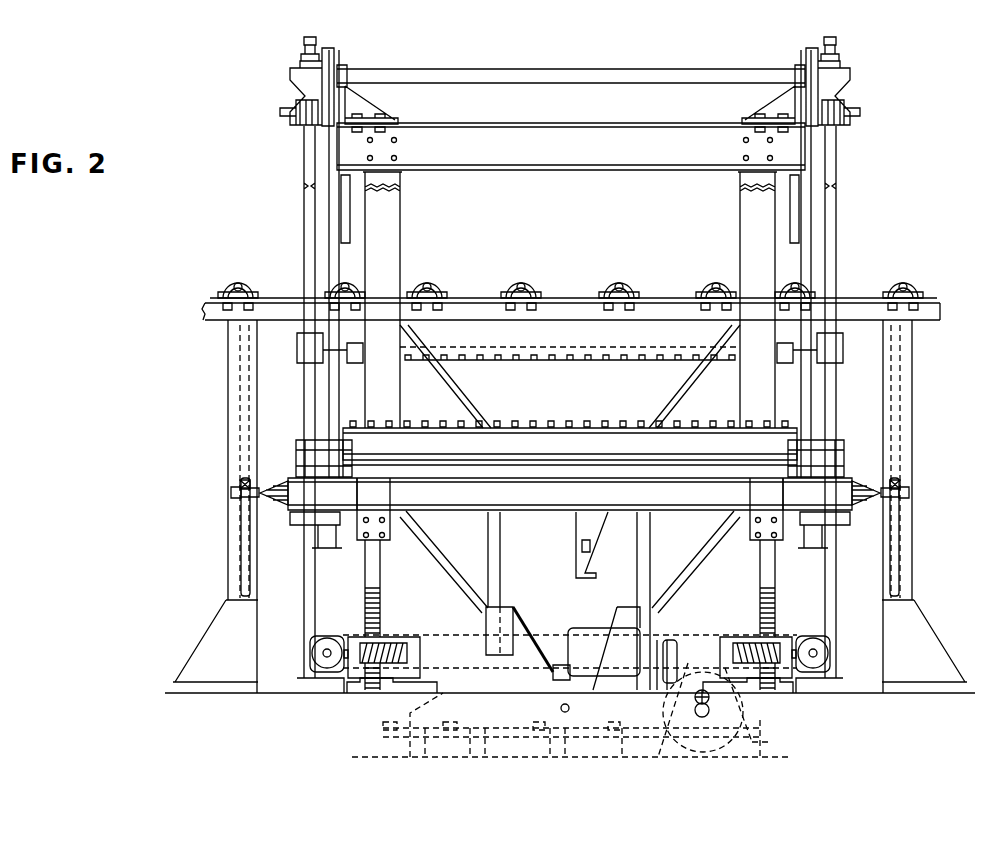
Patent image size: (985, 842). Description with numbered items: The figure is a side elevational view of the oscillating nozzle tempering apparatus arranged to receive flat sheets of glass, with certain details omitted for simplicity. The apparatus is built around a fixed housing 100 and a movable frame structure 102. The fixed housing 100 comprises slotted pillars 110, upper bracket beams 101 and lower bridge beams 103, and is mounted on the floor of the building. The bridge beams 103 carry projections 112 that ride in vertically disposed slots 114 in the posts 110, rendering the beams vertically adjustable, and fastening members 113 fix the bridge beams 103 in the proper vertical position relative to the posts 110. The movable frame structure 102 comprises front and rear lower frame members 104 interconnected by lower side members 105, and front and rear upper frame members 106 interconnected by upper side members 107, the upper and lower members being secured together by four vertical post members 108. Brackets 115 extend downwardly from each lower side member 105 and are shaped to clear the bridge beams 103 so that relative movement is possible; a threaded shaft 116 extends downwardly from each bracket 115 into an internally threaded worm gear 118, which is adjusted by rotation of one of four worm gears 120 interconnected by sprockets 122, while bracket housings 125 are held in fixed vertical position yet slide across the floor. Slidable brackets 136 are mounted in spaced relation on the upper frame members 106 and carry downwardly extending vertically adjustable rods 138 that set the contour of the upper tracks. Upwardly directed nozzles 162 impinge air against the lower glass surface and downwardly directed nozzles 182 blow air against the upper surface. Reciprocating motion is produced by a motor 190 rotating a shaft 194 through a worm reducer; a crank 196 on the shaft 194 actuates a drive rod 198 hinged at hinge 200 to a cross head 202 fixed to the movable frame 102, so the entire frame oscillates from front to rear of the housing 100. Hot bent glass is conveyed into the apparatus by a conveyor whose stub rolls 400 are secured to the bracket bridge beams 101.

The fixed housing 100 is at (199, 645).
The upper bracket beam 101 is at (577, 307).
The movable frame structure 102 is at (352, 399).
The lower bridge beam 103 is at (570, 584).
The lower frame member 104 is at (318, 511).
The lower side member 105 is at (620, 519).
The upper frame member 106 is at (348, 104).
The upper side member 107 is at (571, 117).
The vertical post member 108 is at (400, 198).
The slotted pillar 110 is at (240, 433).
The projection 112 is at (231, 492).
The fastening member 113 is at (240, 483).
The slot 114 is at (242, 529).
The bracket 115 is at (388, 494).
The threaded shaft 116 is at (380, 583).
The internally threaded worm gear 118 is at (400, 645).
The worm gear 120 is at (328, 638).
The sprocket 122 is at (542, 634).
The bracket housing 125 is at (390, 685).
The slidable bracket 136 is at (304, 85).
The vertically adjustable rod 138 is at (303, 187).
The upwardly directed nozzle 162 is at (596, 425).
The downwardly directed nozzle 182 is at (547, 358).
The motor 190 is at (597, 628).
The shaft 194 is at (712, 706).
The crank 196 is at (712, 747).
The drive rod 198 is at (640, 718).
The hinge 200 is at (560, 708).
The cross head 202 is at (523, 613).
The stub roll 400 is at (238, 279).